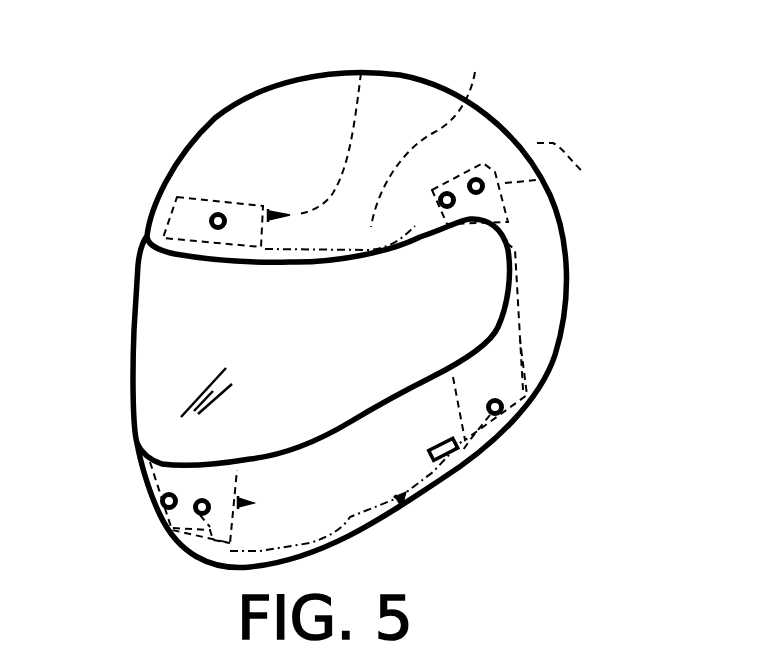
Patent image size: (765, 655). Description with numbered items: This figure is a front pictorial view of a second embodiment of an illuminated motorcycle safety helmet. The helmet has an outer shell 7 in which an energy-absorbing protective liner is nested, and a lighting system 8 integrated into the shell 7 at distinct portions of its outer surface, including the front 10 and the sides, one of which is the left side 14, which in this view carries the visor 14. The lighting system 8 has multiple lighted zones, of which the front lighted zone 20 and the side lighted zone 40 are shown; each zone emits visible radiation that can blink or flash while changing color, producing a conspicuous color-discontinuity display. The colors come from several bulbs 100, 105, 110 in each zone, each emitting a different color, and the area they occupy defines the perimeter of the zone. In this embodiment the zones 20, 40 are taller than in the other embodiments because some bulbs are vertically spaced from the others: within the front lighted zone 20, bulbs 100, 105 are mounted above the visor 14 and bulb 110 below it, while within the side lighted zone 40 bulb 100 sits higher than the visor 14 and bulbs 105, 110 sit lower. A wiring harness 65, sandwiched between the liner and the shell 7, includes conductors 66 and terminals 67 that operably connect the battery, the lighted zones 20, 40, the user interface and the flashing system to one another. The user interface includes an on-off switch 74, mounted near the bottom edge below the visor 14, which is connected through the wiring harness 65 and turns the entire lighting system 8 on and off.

The shell 7 is at (394, 112).
The lighting system 8 is at (233, 138).
The front 10 is at (374, 290).
The visor 14 is at (445, 305).
The front lighted zone 20 is at (368, 63).
The side lighted zone 40 is at (386, 349).
The wiring harness 65 is at (401, 222).
The conductors 66 is at (477, 557).
The terminals 67 is at (520, 223).
The on-off switch 74 is at (450, 458).
The bulb 100 is at (218, 208).
The bulb 105 is at (505, 184).
The bulb 110 is at (500, 413).